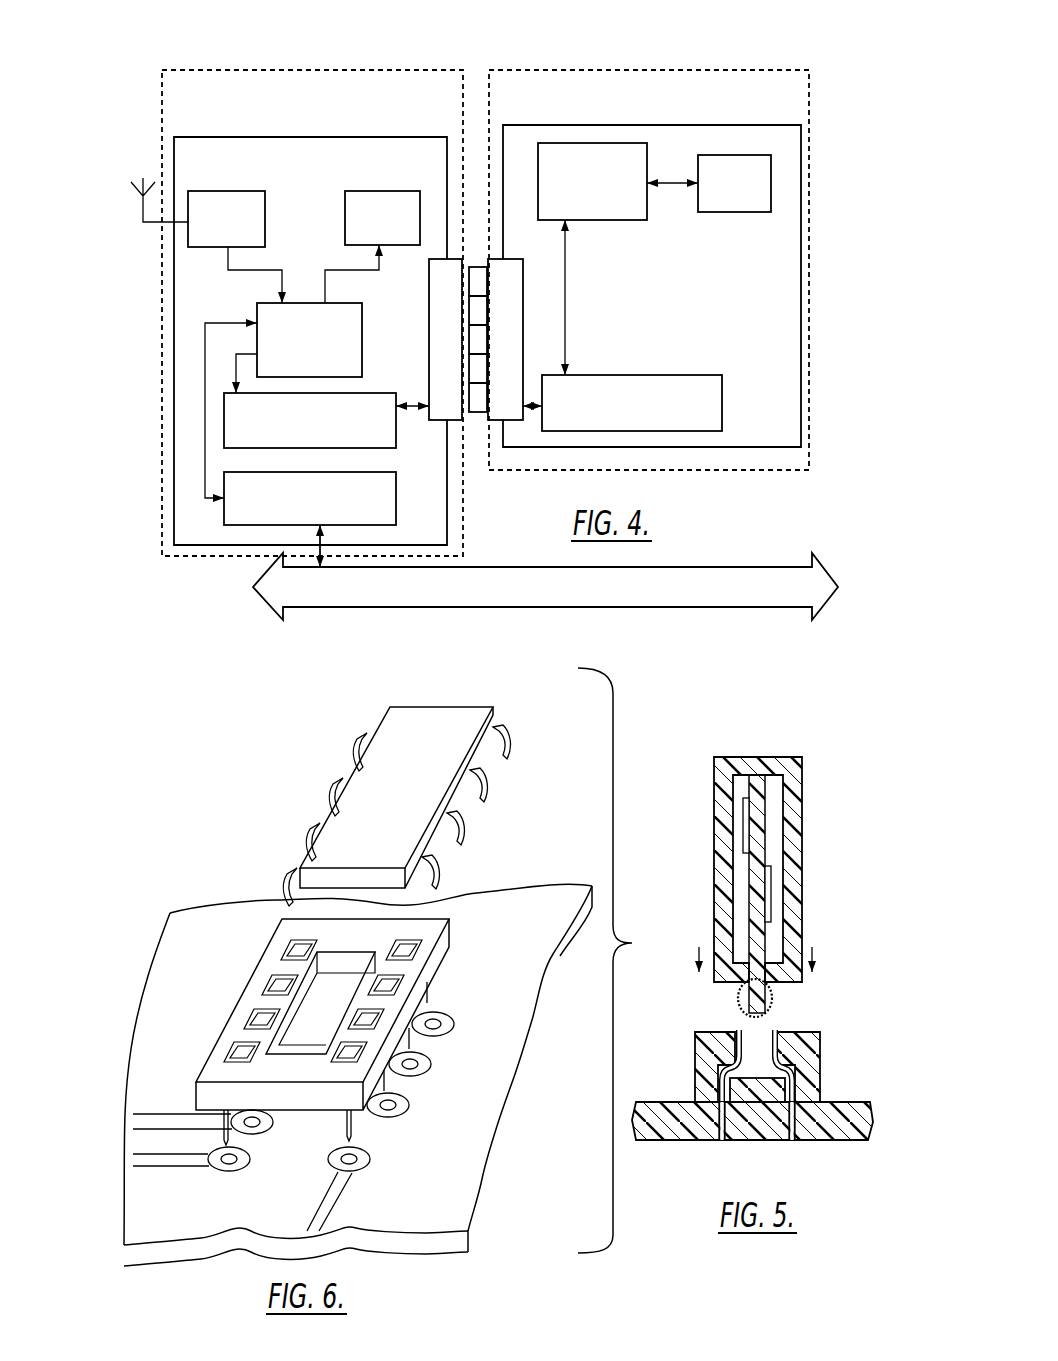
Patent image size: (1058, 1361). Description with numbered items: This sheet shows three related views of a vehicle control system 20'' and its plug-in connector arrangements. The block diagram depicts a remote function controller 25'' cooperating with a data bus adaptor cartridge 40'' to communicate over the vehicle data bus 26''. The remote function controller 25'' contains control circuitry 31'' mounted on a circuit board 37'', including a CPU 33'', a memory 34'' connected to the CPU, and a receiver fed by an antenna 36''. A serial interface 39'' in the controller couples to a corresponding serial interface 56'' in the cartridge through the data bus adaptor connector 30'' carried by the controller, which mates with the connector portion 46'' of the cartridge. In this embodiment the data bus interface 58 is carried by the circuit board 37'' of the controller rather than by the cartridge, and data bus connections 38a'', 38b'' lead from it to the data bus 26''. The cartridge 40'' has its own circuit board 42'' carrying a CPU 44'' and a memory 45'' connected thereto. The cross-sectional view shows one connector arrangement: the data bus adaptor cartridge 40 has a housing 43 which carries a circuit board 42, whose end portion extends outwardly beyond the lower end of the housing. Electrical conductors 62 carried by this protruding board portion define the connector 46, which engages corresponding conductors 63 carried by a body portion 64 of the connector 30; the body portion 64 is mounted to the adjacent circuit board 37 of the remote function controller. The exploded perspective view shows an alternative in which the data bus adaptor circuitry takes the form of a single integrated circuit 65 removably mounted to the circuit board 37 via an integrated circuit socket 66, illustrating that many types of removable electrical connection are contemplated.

In FIG. 4, the control system 20'' is at (505, 313).
In FIG. 4, the remote function controller 25'' is at (288, 317).
In FIG. 4, the data bus 26'' is at (545, 566).
In FIG. 4, the data bus adaptor connector 30'' is at (458, 339).
In FIG. 4, the control circuitry 31'' is at (179, 255).
In FIG. 4, the CPU 33'' is at (228, 355).
In FIG. 4, the memory 34'' is at (389, 194).
In FIG. 4, the antenna 36'' is at (139, 200).
In FIG. 4, the circuit board 37'' is at (271, 341).
In FIG. 4, the data bus connection 38a'' is at (237, 573).
In FIG. 4, the data bus connection 38b'' is at (244, 573).
In FIG. 4, the serial interface 39'' is at (245, 443).
In FIG. 4, the data bus adaptor cartridge 40'' is at (691, 268).
In FIG. 4, the circuit board 42'' is at (688, 286).
In FIG. 4, the CPU 44'' is at (710, 180).
In FIG. 4, the memory 45'' is at (783, 183).
In FIG. 4, the connector portion 46'' is at (505, 339).
In FIG. 4, the serial interface 56'' is at (713, 403).
In FIG. 4, the data bus interface 58 is at (224, 518).
In FIG. 5, the connector 30 is at (793, 1068).
In FIG. 5, the circuit board 37 is at (752, 1151).
In FIG. 6, the circuit board 37 is at (358, 1075).
In FIG. 5, the data bus adaptor cartridge 40 is at (751, 897).
In FIG. 5, the circuit board 42 is at (704, 894).
In FIG. 5, the housing 43 is at (800, 842).
In FIG. 5, the connector 46 is at (751, 1000).
In FIG. 5, the electrical conductors 62 is at (740, 1003).
In FIG. 5, the conductors 63 is at (742, 1040).
In FIG. 5, the body portion 64 is at (820, 1075).
In FIG. 6, the integrated circuit 65 is at (358, 803).
In FIG. 6, the integrated circuit socket 66 is at (219, 1093).